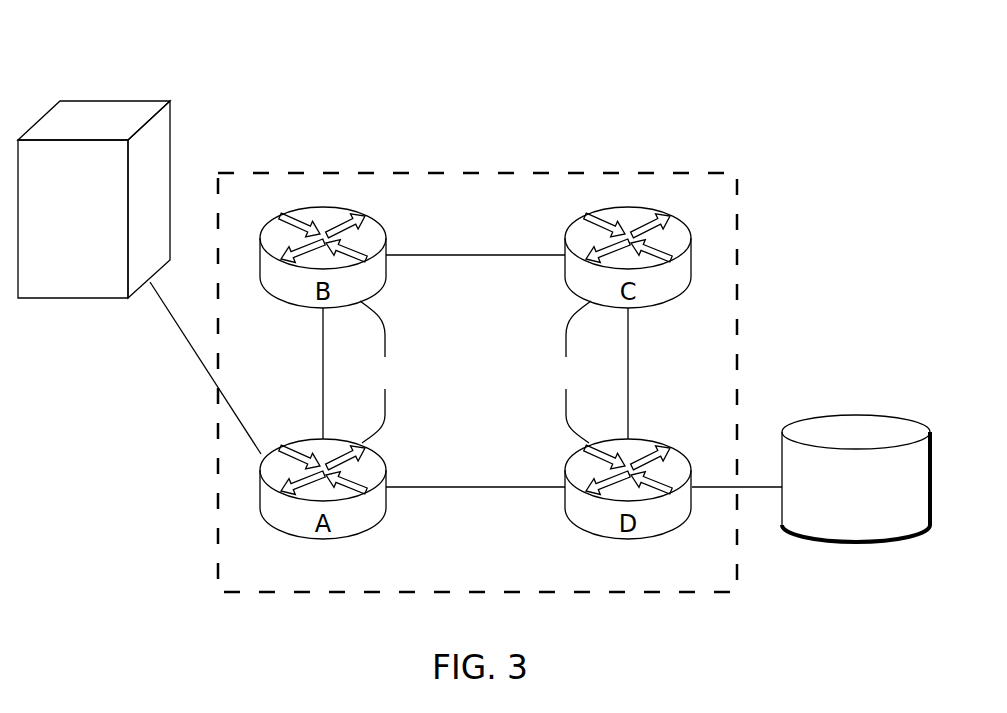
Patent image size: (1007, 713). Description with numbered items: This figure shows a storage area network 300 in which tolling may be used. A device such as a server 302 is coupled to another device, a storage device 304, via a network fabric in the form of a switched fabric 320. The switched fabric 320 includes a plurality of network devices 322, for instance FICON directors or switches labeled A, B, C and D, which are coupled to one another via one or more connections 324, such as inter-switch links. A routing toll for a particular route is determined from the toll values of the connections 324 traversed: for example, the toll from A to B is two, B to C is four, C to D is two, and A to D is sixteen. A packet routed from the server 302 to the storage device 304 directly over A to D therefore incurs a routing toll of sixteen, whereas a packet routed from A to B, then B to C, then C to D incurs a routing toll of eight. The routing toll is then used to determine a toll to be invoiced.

The storage area network 300 is at (763, 77).
The server 302 is at (113, 100).
The storage device 304 is at (858, 415).
The switched fabric 320 is at (456, 566).
The network devices 322 is at (475, 372).
The connections 324 is at (477, 254).